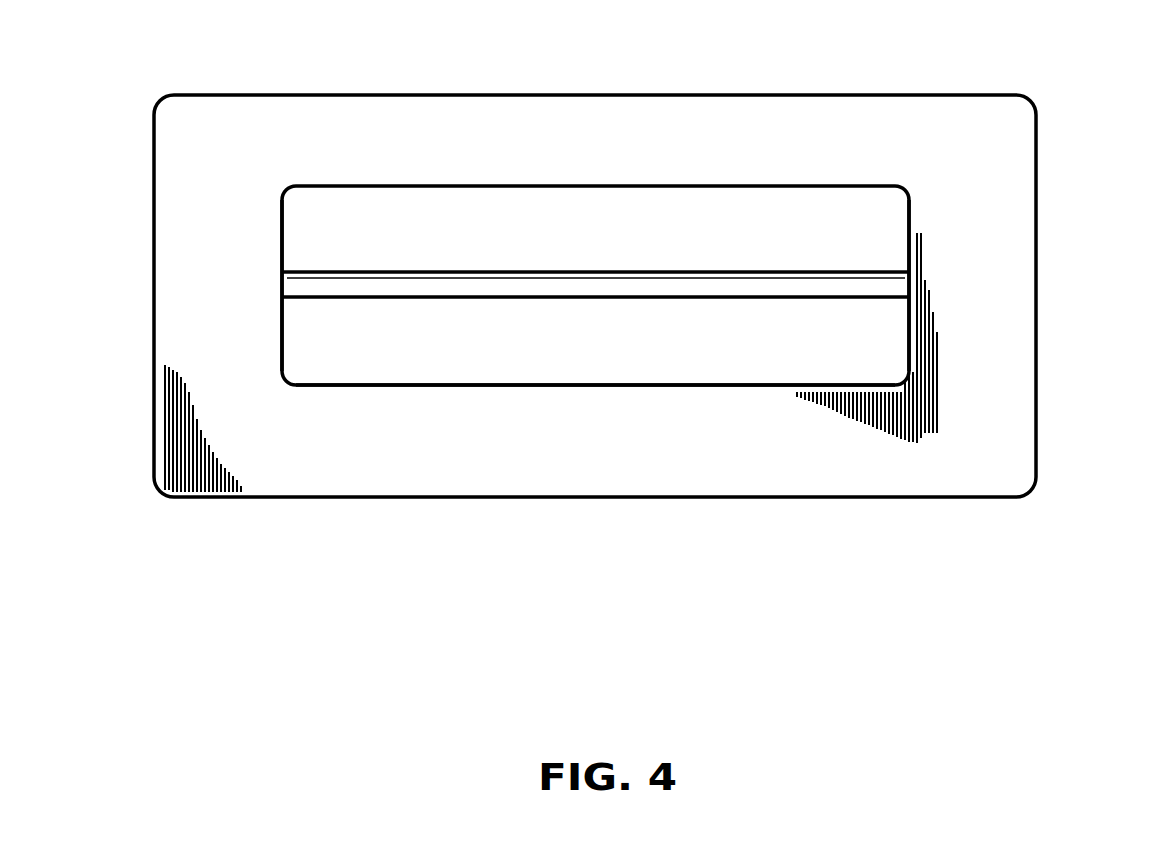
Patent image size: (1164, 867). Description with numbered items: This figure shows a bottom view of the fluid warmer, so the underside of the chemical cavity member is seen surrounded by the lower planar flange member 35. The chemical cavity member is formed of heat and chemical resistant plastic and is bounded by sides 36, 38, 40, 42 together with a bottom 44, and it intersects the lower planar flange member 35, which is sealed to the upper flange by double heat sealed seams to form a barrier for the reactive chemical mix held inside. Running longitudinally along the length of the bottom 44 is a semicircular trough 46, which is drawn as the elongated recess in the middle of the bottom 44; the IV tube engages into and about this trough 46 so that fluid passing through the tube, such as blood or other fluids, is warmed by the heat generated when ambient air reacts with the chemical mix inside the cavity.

The lower planar flange member 35 is at (1003, 125).
The side 36 is at (909, 216).
The side 38 is at (608, 183).
The side 40 is at (282, 244).
The side 42 is at (582, 385).
The bottom 44 is at (472, 366).
The trough 46 is at (890, 282).